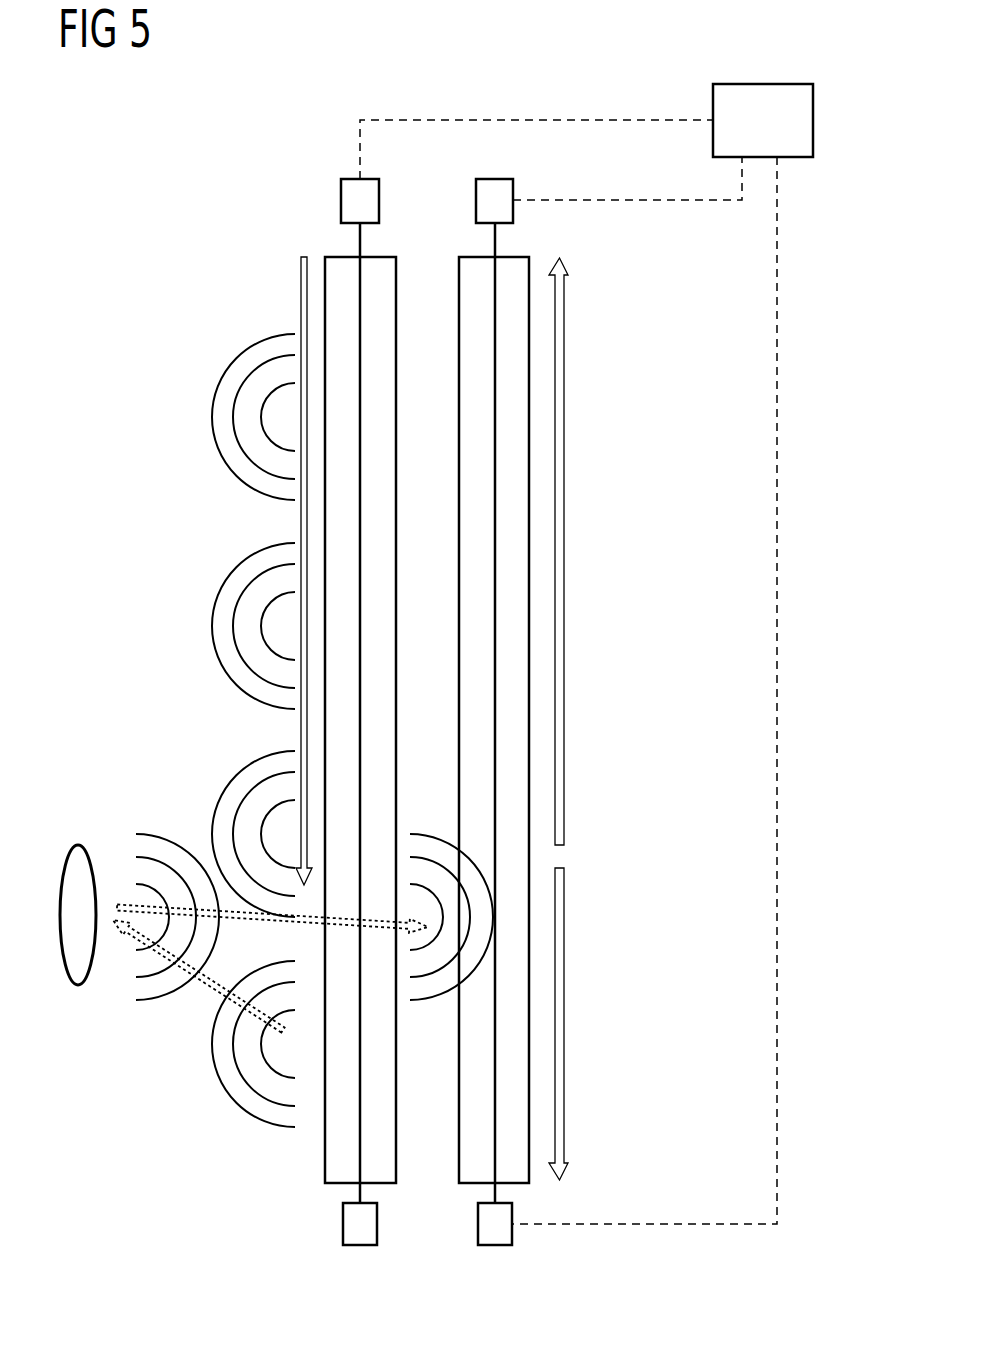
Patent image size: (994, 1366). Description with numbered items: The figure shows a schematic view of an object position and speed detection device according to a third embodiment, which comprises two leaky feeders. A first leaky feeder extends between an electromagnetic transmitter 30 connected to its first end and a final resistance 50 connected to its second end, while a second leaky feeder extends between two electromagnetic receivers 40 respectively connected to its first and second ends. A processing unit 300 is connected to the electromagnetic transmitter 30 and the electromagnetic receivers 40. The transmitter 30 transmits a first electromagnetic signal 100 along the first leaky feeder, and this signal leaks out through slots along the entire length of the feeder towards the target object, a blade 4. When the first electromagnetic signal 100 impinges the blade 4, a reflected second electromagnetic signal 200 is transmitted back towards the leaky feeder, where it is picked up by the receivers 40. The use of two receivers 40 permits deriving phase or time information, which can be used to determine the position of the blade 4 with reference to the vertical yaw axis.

The processing unit 300 is at (735, 84).
The electromagnetic transmitter 30 is at (379, 196).
The electromagnetic receiver 40 is at (513, 197).
The final resistance 50 is at (343, 1232).
The first electromagnetic signal 100 is at (256, 341).
The reflected second electromagnetic signal 200 is at (160, 833).
The blade 4 is at (76, 845).